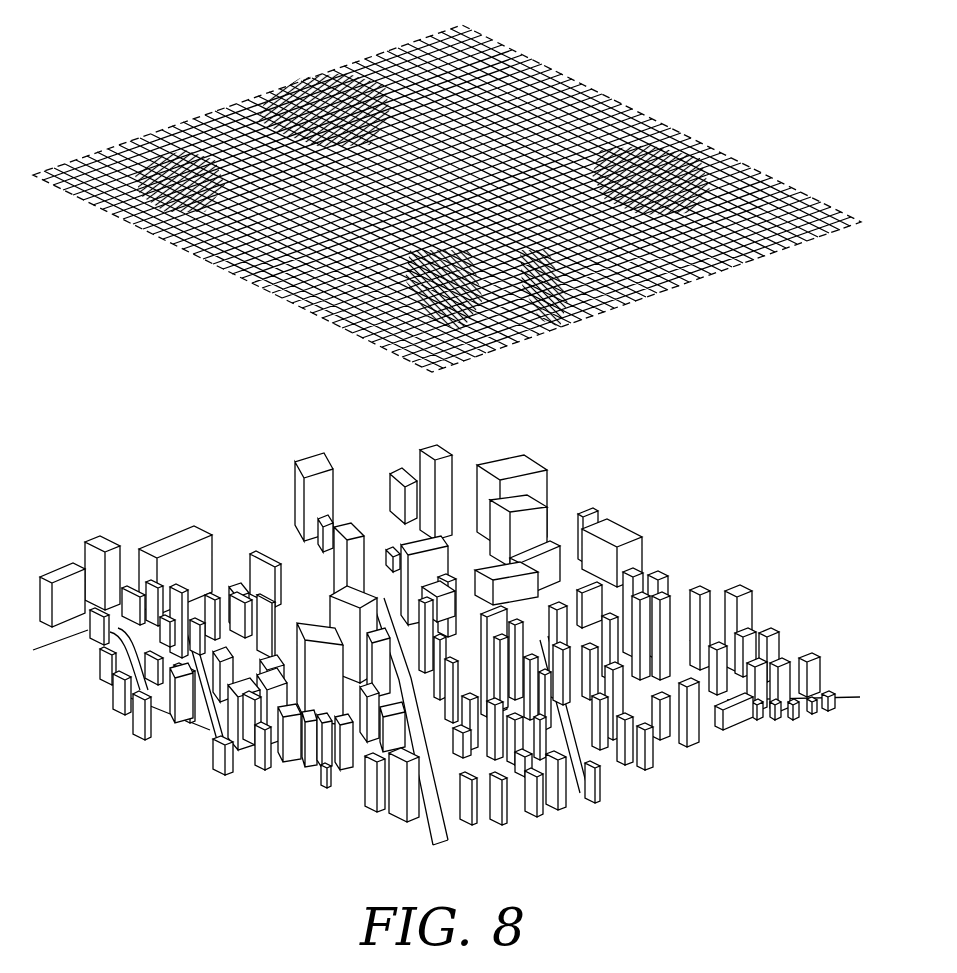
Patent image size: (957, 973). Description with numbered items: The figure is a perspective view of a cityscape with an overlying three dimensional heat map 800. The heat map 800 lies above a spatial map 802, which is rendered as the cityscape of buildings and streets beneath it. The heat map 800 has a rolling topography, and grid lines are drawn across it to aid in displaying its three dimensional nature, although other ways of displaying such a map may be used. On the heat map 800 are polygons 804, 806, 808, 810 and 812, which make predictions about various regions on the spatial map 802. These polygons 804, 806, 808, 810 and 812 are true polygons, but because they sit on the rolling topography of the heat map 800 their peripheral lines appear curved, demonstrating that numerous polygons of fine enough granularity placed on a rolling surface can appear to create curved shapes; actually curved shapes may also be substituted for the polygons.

The three dimensional heat map 800 is at (657, 297).
The spatial map 802 is at (747, 594).
The polygon 804 is at (155, 157).
The polygon 806 is at (322, 74).
The polygon 808 is at (668, 165).
The polygon 810 is at (547, 297).
The polygon 812 is at (462, 328).